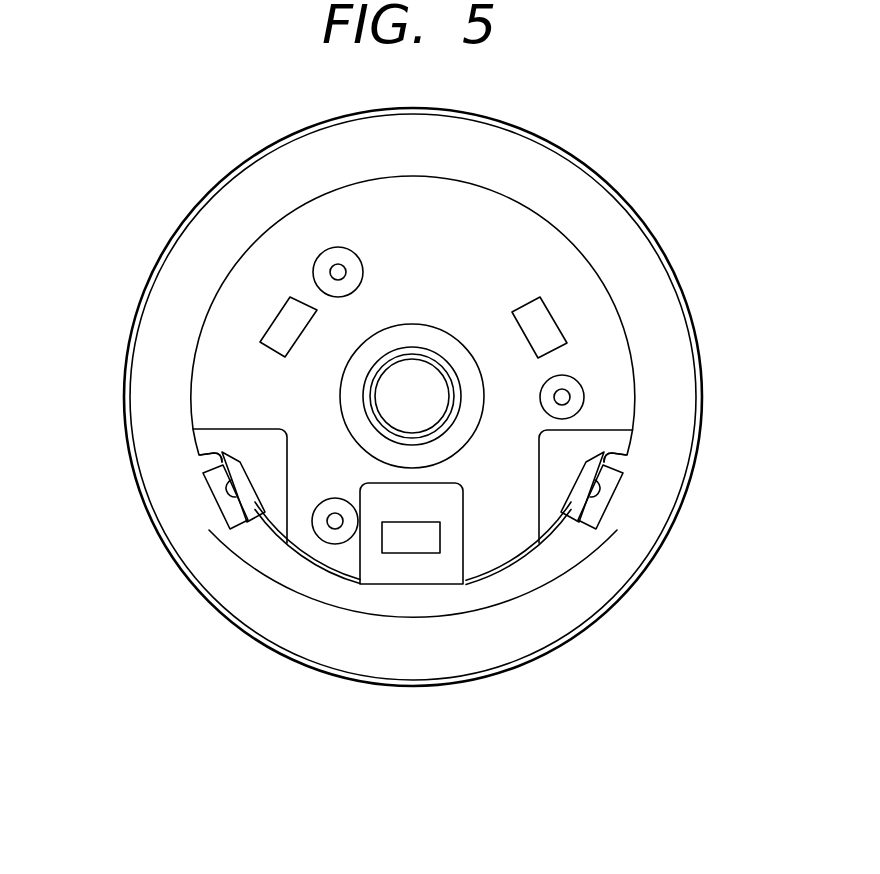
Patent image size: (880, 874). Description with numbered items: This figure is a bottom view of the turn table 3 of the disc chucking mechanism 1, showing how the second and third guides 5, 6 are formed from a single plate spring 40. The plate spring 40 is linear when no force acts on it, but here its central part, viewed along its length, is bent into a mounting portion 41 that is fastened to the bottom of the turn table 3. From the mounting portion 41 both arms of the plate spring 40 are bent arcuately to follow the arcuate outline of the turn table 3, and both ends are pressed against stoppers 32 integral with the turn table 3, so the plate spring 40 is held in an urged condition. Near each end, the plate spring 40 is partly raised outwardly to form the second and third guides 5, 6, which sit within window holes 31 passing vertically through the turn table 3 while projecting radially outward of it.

The disc chucking mechanism 1 is at (704, 181).
The turn table 3 is at (653, 270).
The second guide 5 is at (613, 520).
The third guide 6 is at (220, 503).
The window hole 31 is at (212, 491).
The stopper 32 is at (212, 463).
The plate spring 40 is at (545, 543).
The mounting portion 41 is at (440, 573).